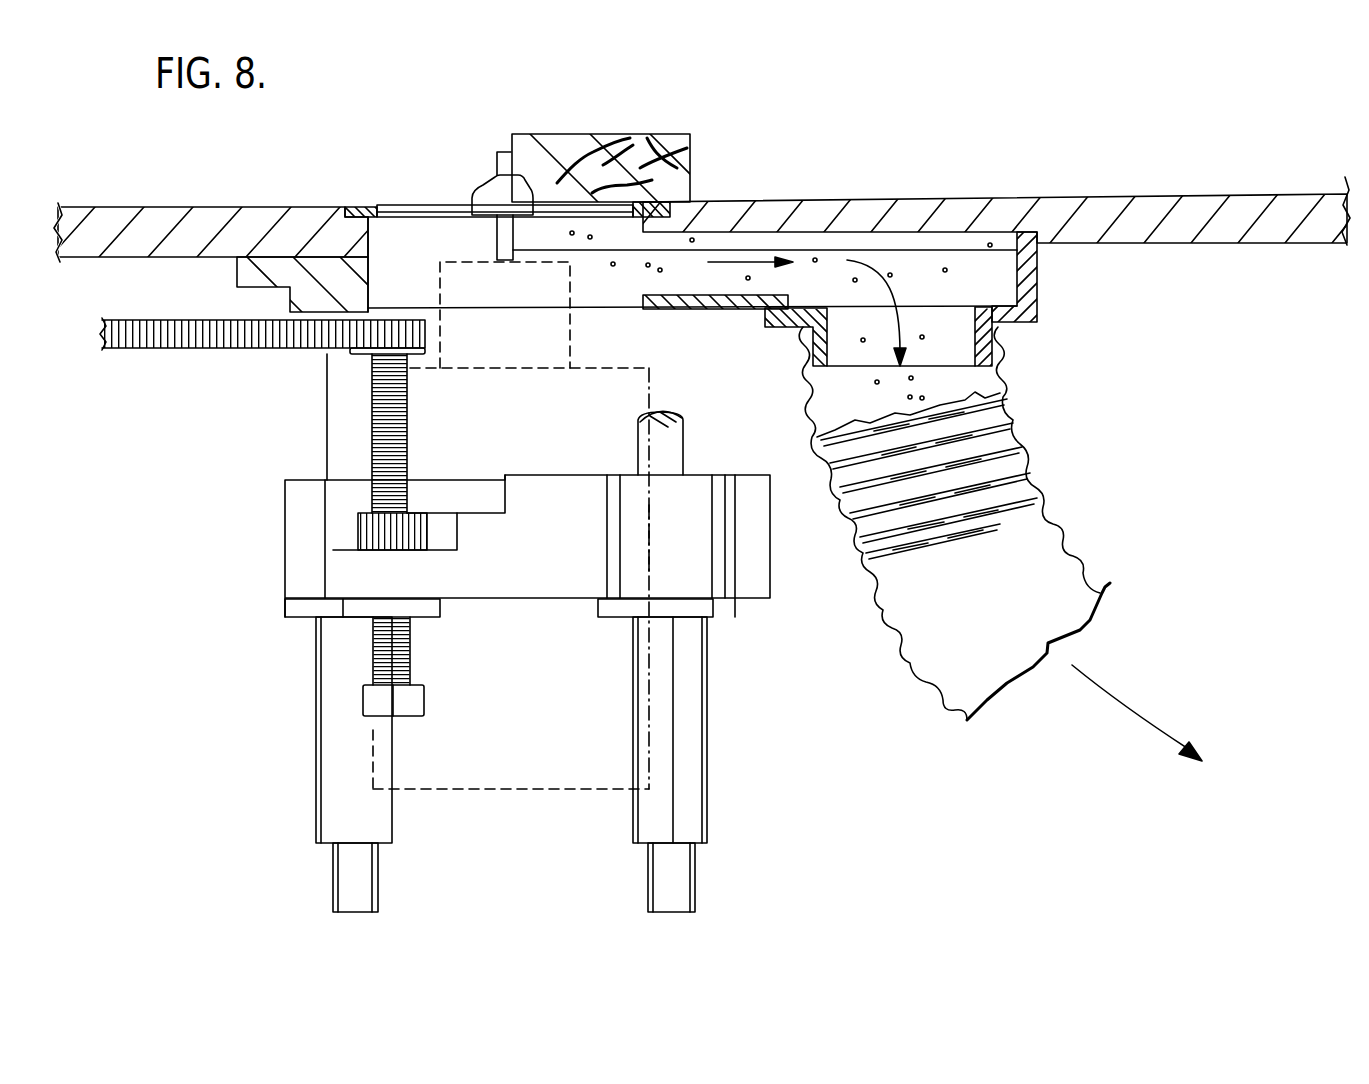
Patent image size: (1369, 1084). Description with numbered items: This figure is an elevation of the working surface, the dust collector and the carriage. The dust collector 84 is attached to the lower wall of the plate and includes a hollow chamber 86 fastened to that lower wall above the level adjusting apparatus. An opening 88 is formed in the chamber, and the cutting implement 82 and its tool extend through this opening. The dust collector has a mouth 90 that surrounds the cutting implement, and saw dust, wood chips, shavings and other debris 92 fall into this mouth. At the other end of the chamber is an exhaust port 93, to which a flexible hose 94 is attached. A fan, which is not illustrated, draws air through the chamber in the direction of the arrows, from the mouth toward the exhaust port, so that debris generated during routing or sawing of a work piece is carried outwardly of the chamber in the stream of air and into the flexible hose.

The cutting implement 82 is at (495, 165).
The dust collector 84 is at (1058, 302).
The hollow chamber 86 is at (903, 250).
The opening 88 is at (368, 237).
The mouth 90 is at (388, 204).
The debris 92 is at (680, 279).
The exhaust port 93 is at (985, 340).
The flexible hose 94 is at (1063, 533).